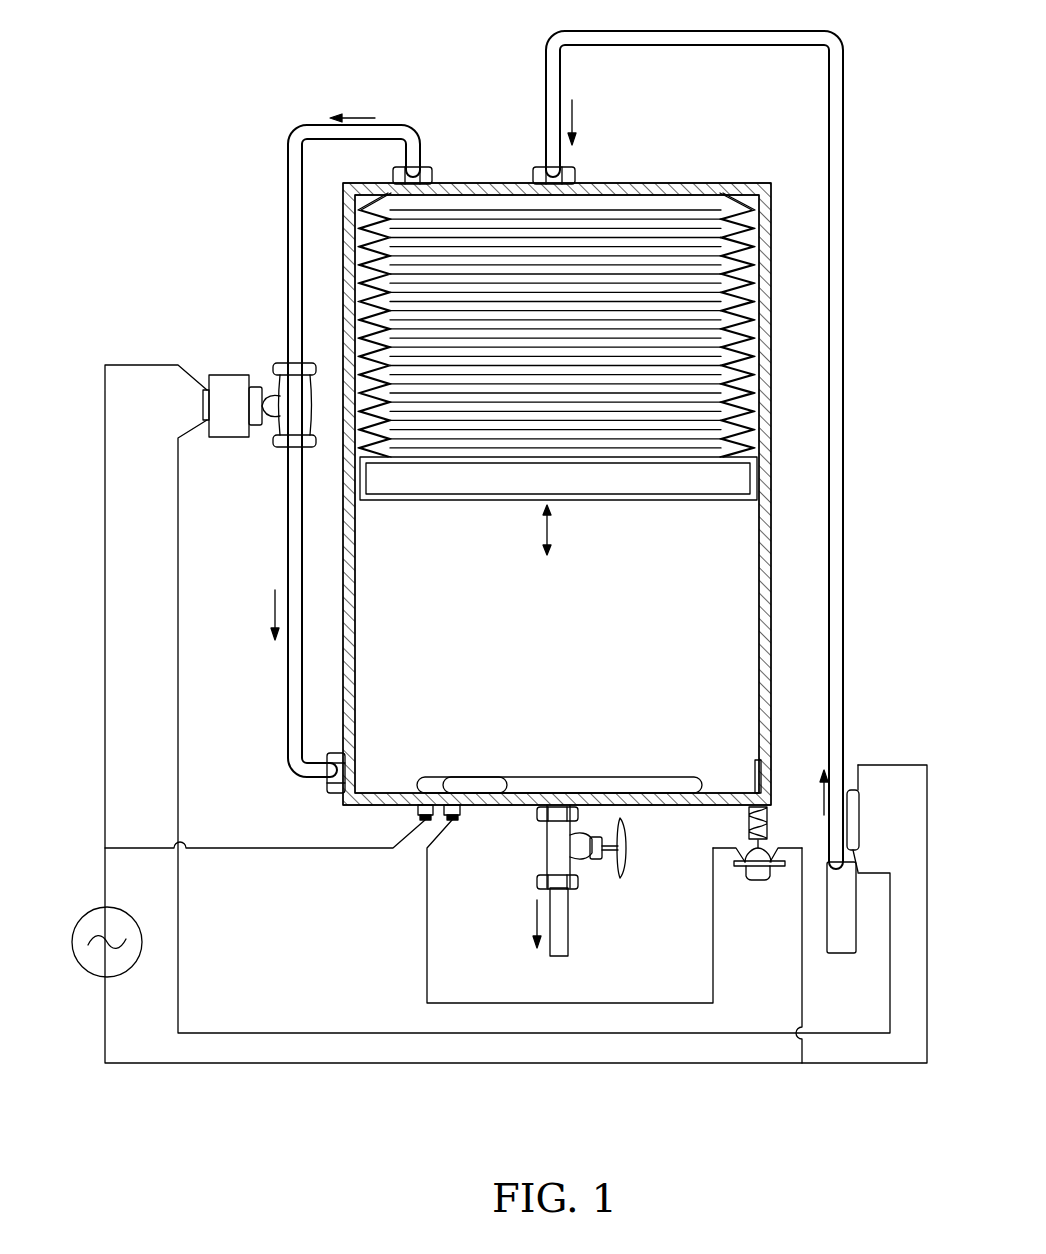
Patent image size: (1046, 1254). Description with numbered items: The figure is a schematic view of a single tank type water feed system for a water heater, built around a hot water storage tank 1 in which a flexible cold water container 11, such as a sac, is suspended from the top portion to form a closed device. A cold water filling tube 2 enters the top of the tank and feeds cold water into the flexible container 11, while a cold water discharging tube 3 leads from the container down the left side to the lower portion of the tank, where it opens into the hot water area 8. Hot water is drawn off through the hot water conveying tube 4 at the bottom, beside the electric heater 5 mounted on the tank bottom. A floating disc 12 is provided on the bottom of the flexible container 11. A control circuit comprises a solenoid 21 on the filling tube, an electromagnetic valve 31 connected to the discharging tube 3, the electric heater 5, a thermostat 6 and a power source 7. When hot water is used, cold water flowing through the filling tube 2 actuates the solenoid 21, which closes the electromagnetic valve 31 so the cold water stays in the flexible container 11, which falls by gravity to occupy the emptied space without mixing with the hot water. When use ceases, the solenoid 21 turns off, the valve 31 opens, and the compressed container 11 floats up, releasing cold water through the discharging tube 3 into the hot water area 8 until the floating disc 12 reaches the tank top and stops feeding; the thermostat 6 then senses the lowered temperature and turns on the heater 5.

The hot water storage tank 1 is at (690, 184).
The cold water filling tube 2 is at (848, 280).
The cold water discharging tube 3 is at (288, 282).
The hot water conveying tube 4 is at (569, 912).
The electric heater 5 is at (592, 777).
The thermostat 6 is at (759, 880).
The power source 7 is at (95, 910).
The hot water area 8 is at (714, 654).
The flexible cold water container 11 is at (771, 400).
The floating disc 12 is at (600, 501).
The solenoid 21 is at (860, 805).
The electromagnetic valve 31 is at (230, 438).